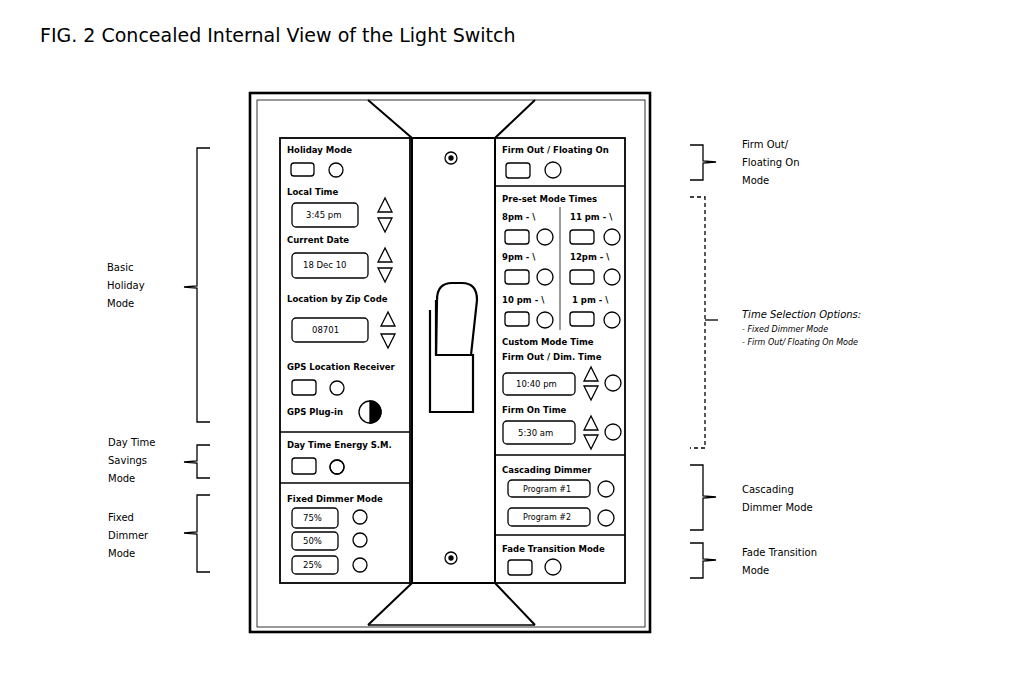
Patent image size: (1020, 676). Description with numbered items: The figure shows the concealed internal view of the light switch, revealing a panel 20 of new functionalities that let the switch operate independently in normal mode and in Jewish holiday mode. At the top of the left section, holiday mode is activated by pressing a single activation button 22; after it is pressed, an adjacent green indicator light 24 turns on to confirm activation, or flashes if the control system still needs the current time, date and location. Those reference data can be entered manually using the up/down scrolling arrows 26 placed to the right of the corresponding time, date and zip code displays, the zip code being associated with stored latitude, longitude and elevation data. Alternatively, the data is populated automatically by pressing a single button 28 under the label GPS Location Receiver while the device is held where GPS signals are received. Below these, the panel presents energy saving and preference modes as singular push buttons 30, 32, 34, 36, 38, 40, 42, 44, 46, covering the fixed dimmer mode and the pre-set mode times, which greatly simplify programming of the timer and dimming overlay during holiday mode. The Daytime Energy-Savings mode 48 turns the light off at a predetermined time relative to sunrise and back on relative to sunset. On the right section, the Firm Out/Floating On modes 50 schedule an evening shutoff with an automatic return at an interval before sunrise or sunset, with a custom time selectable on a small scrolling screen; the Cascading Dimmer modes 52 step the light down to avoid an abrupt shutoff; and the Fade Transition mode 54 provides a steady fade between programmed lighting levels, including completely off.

The panel 20 is at (200, 104).
The activation button 22 is at (340, 163).
The green indicator light 24 is at (300, 162).
The up/down scrolling arrows 26 is at (388, 340).
The GPS Location Receiver button 28 is at (332, 383).
The push button 30 is at (358, 515).
The push button 32 is at (358, 540).
The push button 34 is at (358, 567).
The push button 36 is at (548, 232).
The push button 38 is at (549, 274).
The push button 40 is at (616, 275).
The push button 42 is at (614, 233).
The push button 44 is at (549, 319).
The push button 46 is at (616, 324).
The Daytime Energy-Savings mode 48 is at (333, 462).
The Firm Out/Floating On modes 50 is at (556, 163).
The Cascading Dimmer modes 52 is at (611, 514).
The Fade Transition mode 54 is at (558, 572).